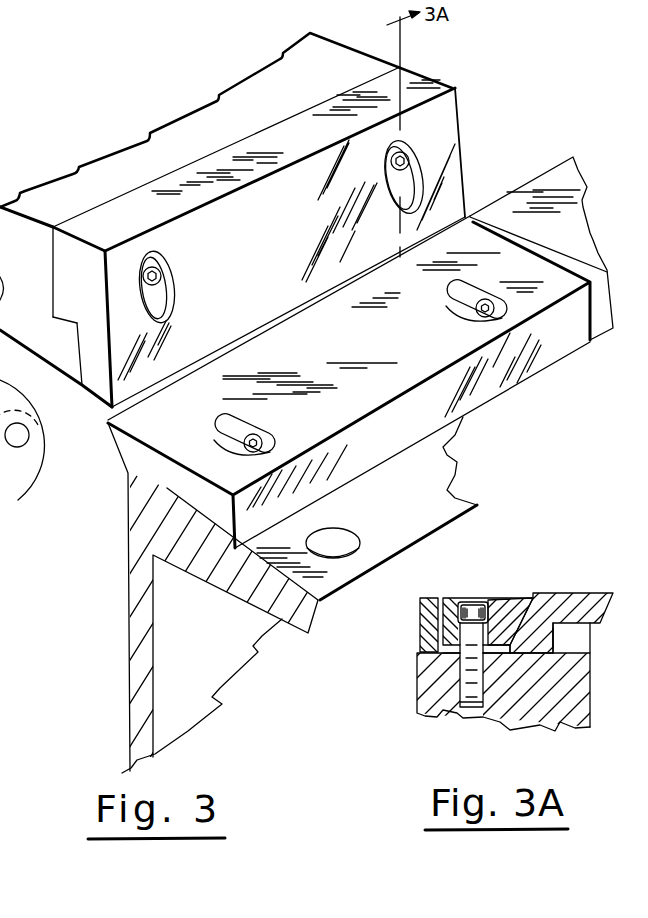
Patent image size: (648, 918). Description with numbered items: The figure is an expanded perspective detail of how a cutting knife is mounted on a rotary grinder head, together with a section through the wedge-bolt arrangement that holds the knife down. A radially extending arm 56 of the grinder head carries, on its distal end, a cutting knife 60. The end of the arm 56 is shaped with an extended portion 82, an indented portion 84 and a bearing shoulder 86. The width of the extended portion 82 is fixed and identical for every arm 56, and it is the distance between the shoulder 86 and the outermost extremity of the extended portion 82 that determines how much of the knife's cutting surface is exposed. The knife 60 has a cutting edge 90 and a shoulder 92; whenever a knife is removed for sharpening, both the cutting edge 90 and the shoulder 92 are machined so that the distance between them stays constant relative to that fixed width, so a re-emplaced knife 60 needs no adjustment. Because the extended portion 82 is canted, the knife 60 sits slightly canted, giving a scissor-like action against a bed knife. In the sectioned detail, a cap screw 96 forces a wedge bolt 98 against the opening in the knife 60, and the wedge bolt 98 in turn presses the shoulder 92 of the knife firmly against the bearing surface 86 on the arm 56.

In FIG. 3, the radially extending arm 56 is at (202, 120).
In FIG. 3A, the radially extending arm 56 is at (423, 678).
In FIG. 3, the cutting knife 60 is at (100, 388).
In FIG. 3A, the cutting knife 60 is at (555, 598).
In FIG. 3, the extended portion 82 is at (60, 352).
In FIG. 3, the indented portion 84 is at (53, 270).
In FIG. 3, the bearing shoulder 86 is at (63, 329).
In FIG. 3A, the bearing shoulder 86 is at (553, 643).
In FIG. 3, the cutting edge 90 is at (110, 453).
In FIG. 3, the shoulder 92 is at (170, 501).
In FIG. 3A, the shoulder 92 is at (547, 643).
In FIG. 3A, the cap screw 96 is at (475, 608).
In FIG. 3A, the wedge bolt 98 is at (510, 597).